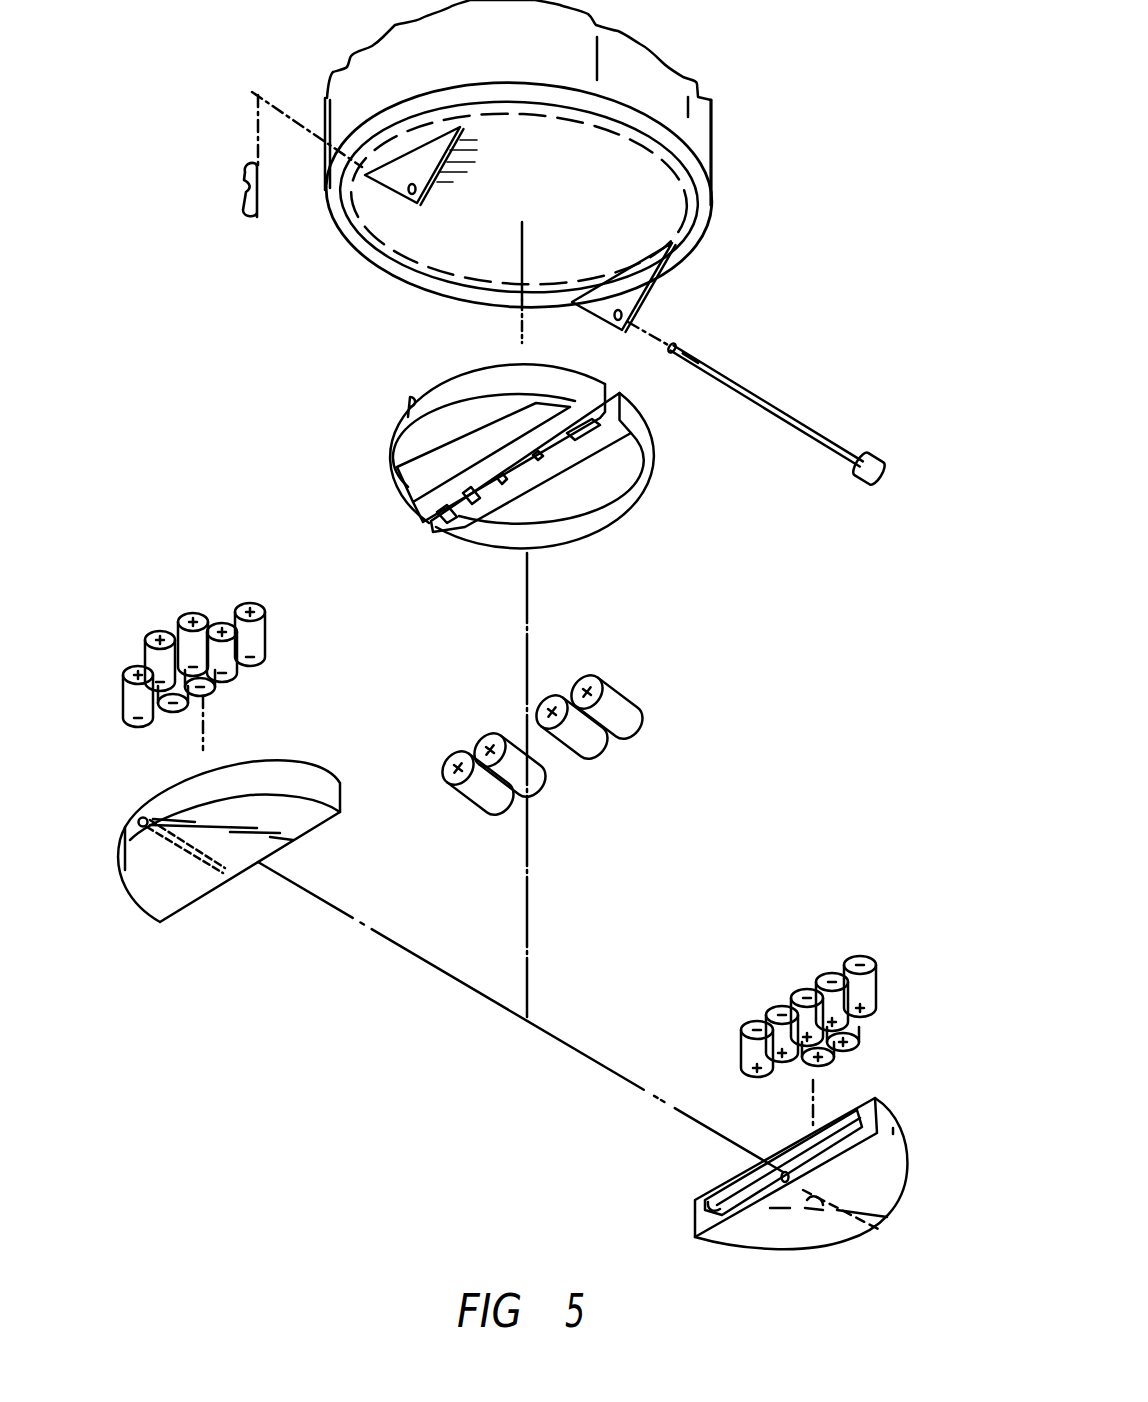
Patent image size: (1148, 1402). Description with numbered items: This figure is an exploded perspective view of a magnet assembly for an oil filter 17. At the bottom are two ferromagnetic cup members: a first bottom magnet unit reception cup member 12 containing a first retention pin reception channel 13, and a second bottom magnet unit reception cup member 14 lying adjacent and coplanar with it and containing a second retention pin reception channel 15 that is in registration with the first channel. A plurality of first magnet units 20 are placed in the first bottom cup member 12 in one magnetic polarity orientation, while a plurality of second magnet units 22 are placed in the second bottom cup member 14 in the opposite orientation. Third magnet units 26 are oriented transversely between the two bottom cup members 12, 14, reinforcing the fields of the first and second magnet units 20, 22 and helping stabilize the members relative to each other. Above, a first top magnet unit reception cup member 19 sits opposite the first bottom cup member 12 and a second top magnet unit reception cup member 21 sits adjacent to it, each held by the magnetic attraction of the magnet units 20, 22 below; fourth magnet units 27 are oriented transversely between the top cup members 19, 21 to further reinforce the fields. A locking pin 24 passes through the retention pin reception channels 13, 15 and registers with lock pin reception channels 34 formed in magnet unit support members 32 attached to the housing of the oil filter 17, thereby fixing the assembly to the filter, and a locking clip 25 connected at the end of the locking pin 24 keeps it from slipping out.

The first bottom magnet unit reception cup member 12 is at (165, 890).
The first retention pin reception channel 13 is at (210, 852).
The second bottom magnet unit reception cup member 14 is at (757, 1233).
The second retention pin reception channel 15 is at (822, 1203).
The oil filter 17 is at (712, 212).
The first top magnet unit reception cup member 19 is at (437, 393).
The first magnet units 20 is at (180, 625).
The second top magnet unit reception cup member 21 is at (607, 527).
The second magnet units 22 is at (800, 1007).
The locking pin 24 is at (817, 440).
The locking clip 25 is at (250, 223).
The third magnet units 26 is at (623, 700).
The fourth magnet units 27 is at (457, 510).
The magnet unit support members 32 is at (407, 152).
The lock pin reception channels 34 is at (390, 197).